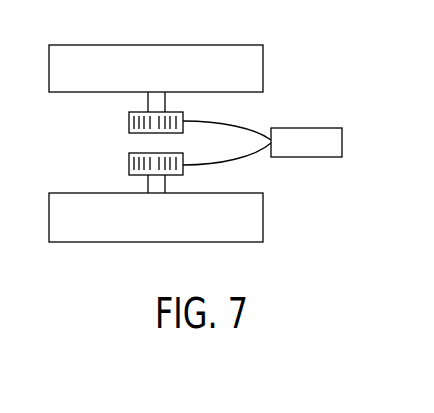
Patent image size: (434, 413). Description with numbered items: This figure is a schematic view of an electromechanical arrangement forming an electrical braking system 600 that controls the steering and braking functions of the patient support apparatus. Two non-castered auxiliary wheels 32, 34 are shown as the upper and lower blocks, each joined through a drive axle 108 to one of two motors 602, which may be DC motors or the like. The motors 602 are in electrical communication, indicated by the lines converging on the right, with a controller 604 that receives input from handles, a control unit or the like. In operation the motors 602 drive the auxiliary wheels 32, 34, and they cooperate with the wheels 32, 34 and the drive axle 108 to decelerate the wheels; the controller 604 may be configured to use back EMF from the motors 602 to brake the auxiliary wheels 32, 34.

The auxiliary wheel 32 is at (142, 53).
The auxiliary wheel 34 is at (112, 232).
The drive axle 108 is at (155, 98).
The electrical braking system 600 is at (196, 127).
The motor 602 is at (129, 124).
The controller 604 is at (308, 150).